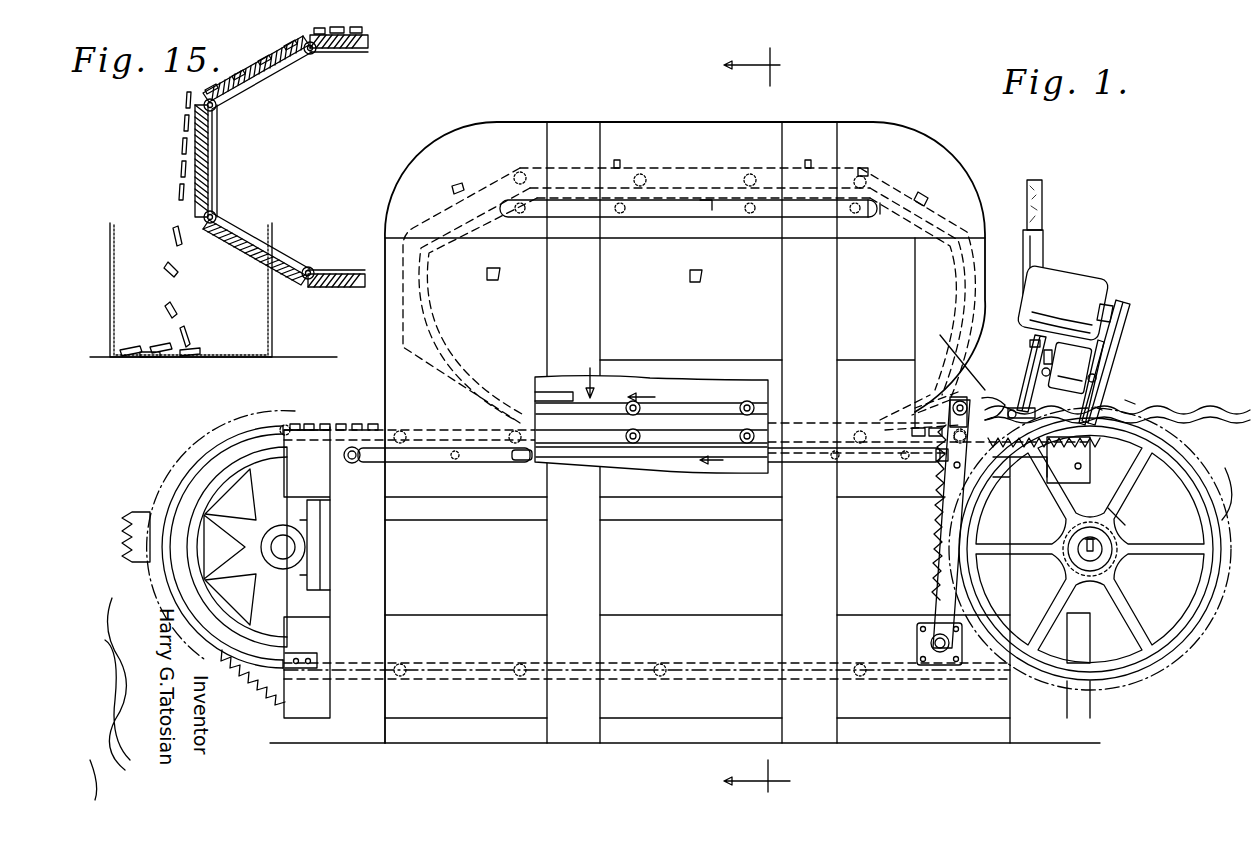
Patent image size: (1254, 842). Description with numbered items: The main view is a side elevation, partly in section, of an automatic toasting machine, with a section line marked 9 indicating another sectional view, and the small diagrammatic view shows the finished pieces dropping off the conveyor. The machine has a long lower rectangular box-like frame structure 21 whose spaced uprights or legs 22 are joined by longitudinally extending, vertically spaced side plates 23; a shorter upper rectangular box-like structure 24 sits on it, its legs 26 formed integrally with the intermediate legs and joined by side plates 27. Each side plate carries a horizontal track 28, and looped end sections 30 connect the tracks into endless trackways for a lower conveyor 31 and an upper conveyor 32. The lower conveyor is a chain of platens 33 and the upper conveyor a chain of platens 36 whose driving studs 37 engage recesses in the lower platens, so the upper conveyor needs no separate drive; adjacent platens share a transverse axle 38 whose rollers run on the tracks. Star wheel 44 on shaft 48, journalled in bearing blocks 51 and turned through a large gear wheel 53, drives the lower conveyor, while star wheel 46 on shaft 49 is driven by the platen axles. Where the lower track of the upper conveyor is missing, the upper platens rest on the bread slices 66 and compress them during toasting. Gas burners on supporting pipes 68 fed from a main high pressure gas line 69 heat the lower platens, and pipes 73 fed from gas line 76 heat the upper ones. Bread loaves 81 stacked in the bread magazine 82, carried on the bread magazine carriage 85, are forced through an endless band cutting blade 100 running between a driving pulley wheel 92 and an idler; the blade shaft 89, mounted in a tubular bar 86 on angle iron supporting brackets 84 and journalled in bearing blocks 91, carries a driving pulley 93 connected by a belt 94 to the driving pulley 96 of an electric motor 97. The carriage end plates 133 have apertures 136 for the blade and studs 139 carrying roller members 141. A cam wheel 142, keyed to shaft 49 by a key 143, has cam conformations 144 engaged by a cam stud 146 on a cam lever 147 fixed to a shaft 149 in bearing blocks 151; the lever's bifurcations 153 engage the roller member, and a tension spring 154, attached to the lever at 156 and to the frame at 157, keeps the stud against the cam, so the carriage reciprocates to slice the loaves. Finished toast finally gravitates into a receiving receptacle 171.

In FIG. 1, the section line 9- 9 is at (748, 420).
In FIG. 1, the lower rectangular box-like frame structure 21 is at (1098, 718).
In FIG. 1, the uprights or legs 22 is at (378, 588).
In FIG. 1, the side plates 23 is at (705, 612).
In FIG. 1, the upper rectangular box-like structure 24 is at (384, 362).
In FIG. 1, the uprights or legs 26 is at (600, 306).
In FIG. 1, the side plates 27 is at (693, 360).
In FIG. 1, the horizontal track 28 is at (535, 405).
In FIG. 1, the looped end sections 30 is at (148, 512).
In FIG. 1, the lower conveyor 31 is at (673, 444).
In FIG. 1, the upper conveyor 32 is at (588, 368).
In FIG. 1, the platens 33 is at (185, 440).
In FIG. 15, the platens 36 is at (370, 44).
In FIG. 1, the platens 36 is at (656, 168).
In FIG. 1, the driving studs 37 is at (459, 184).
In FIG. 15, the axle 38 is at (312, 56).
In FIG. 1, the star wheel 44 is at (232, 522).
In FIG. 1, the star wheel 46 is at (1105, 474).
In FIG. 1, the shaft 48 is at (270, 555).
In FIG. 1, the shaft 49 is at (1080, 556).
In FIG. 1, the bearing blocks 51 is at (300, 580).
In FIG. 1, the gear wheel 53 is at (240, 700).
In FIG. 15, the bread slices 66 is at (352, 25).
In FIG. 1, the bread slices 66 is at (340, 420).
In FIG. 1, the supporting pipe 68 is at (516, 462).
In FIG. 1, the main high pressure gas line 69 is at (462, 462).
In FIG. 1, the supporting pipe 73 is at (722, 217).
In FIG. 1, the main high pressure gas line 76 is at (672, 212).
In FIG. 1, the bread loaves 81 is at (1043, 193).
In FIG. 1, the bread magazine 82 is at (1050, 243).
In FIG. 1, the angle iron supporting brackets 84 is at (1135, 404).
In FIG. 1, the bread magazine carriage 85 is at (1028, 343).
In FIG. 1, the tubular bar 86 is at (1070, 368).
In FIG. 1, the shaft 89 is at (1044, 356).
In FIG. 1, the bearing blocks 91 is at (1038, 340).
In FIG. 1, the driving pulley wheel 92 is at (1008, 413).
In FIG. 1, the driving pulley 93 is at (1102, 410).
In FIG. 1, the belt 94 is at (1125, 300).
In FIG. 1, the driving pulley 96 is at (1130, 315).
In FIG. 1, the electric motor 97 is at (1080, 285).
In FIG. 1, the endless band cutting blade 100 is at (1042, 373).
In FIG. 1, the end plates 133 is at (972, 395).
In FIG. 15, the aperture 136 is at (342, 287).
In FIG. 1, the aperture 136 is at (1010, 415).
In FIG. 1, the stud 139 is at (960, 418).
In FIG. 1, the roller member 141 is at (950, 400).
In FIG. 1, the cam wheel 142 is at (1228, 485).
In FIG. 1, the key 143 is at (1082, 548).
In FIG. 1, the cam conformations 144 is at (1165, 410).
In FIG. 1, the cam stud 146 is at (935, 558).
In FIG. 1, the cam lever 147 is at (940, 508).
In FIG. 1, the shaft 149 is at (938, 652).
In FIG. 1, the bearing blocks 151 is at (917, 643).
In FIG. 1, the bifurcations 153 is at (940, 340).
In FIG. 1, the tension spring 154 is at (1022, 480).
In FIG. 1, the spring connection 156 is at (952, 466).
In FIG. 1, the spring connection 157 is at (1170, 432).
In FIG. 15, the receiving receptacle 171 is at (272, 337).